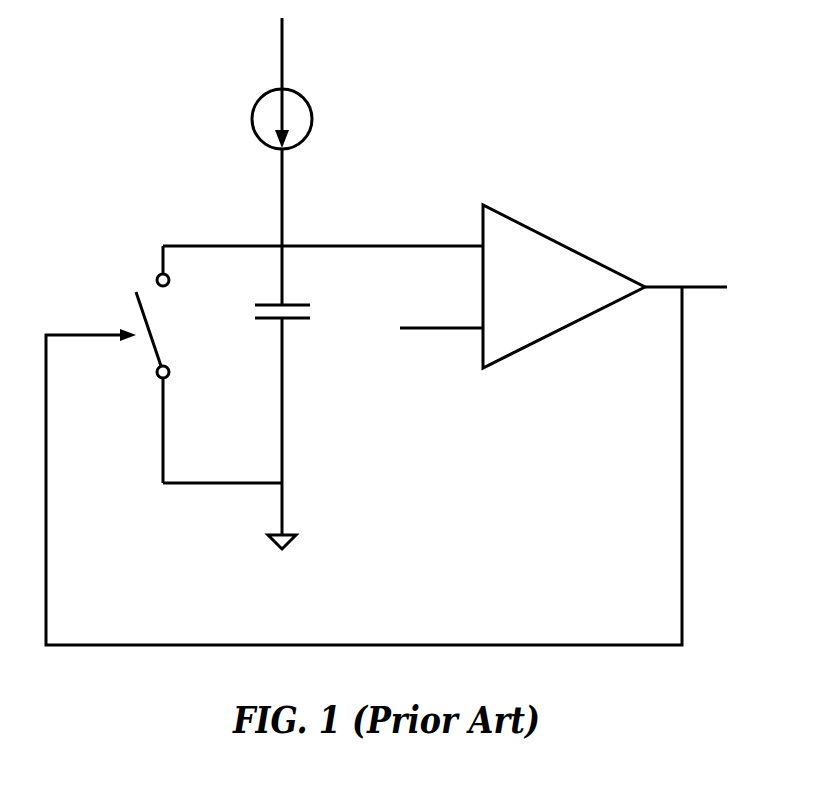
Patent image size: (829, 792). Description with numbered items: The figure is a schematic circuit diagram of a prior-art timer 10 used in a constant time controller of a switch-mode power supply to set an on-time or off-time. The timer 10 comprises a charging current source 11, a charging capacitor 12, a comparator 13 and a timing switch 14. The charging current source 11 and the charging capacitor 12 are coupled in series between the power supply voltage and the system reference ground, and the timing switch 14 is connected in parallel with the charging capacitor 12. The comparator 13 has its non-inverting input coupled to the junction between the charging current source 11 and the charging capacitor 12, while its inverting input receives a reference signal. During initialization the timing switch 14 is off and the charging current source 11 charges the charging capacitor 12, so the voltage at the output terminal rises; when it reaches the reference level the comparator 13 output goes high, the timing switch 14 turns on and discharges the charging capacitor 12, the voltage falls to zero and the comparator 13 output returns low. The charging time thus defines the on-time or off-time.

The timer 10 is at (386, 329).
The charging current source 11 is at (312, 113).
The charging capacitor 12 is at (296, 320).
The comparator 13 is at (523, 247).
The timing switch 14 is at (178, 291).